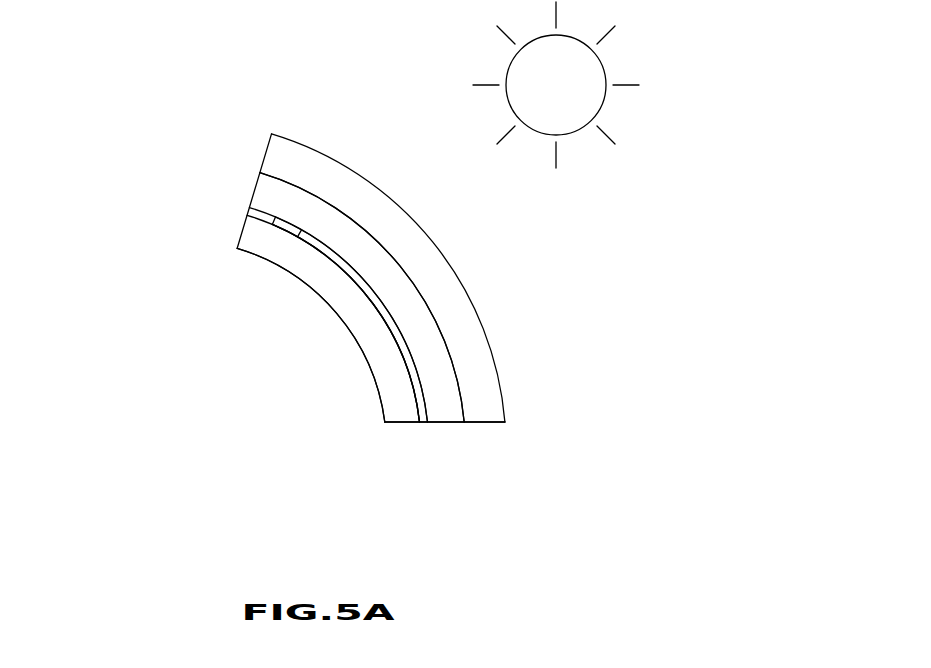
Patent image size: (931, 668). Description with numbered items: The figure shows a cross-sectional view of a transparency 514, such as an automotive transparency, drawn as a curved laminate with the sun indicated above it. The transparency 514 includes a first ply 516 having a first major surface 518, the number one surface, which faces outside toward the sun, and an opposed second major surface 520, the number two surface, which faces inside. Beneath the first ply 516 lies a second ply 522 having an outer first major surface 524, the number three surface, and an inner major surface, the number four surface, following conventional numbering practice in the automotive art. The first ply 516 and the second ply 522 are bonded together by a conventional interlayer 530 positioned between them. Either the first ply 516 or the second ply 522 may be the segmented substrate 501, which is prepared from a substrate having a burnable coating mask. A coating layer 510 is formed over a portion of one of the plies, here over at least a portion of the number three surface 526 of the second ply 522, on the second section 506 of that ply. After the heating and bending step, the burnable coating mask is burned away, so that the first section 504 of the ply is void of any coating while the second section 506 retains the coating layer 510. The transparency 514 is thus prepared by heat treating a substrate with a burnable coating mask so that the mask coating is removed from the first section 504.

The transparency 514 is at (180, 167).
The interlayer 530 is at (270, 187).
The first section 504 is at (285, 221).
The segmented substrate 501 is at (246, 232).
The No. 3 surface 526 is at (270, 267).
The coating layer 510 is at (364, 293).
The first major surface 518 is at (473, 302).
The first ply 516 is at (488, 407).
The second major surface 520 is at (463, 422).
The first major surface of second ply 524 is at (450, 360).
The second section 506 is at (421, 412).
The second ply 522 is at (395, 422).